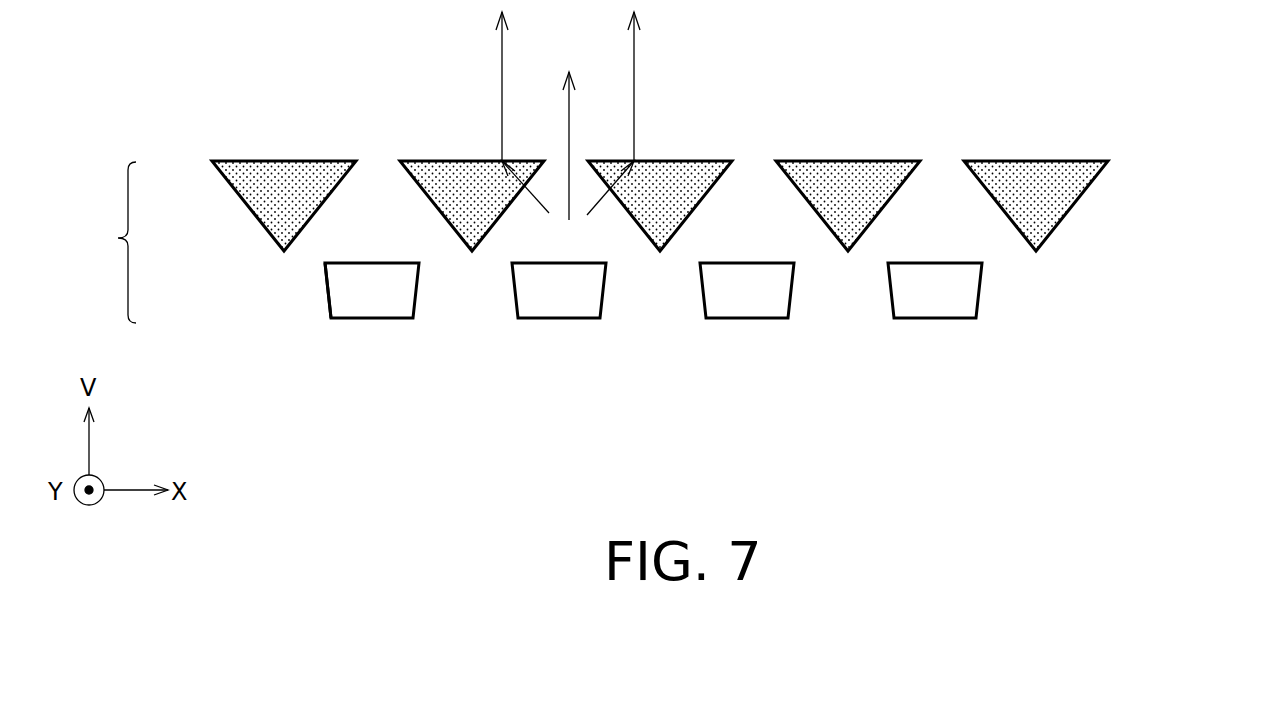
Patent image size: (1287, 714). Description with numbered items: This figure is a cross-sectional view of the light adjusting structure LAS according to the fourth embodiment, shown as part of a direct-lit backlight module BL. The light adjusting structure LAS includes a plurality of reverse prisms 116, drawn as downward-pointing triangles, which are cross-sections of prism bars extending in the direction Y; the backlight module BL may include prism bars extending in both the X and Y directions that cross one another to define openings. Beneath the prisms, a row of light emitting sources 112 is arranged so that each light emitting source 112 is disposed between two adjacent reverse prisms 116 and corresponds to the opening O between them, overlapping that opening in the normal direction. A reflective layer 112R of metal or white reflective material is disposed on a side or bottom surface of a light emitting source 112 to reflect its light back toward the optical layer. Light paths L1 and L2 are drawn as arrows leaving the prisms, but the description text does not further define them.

The reverse prism 116 is at (289, 172).
The light emitting source 112 is at (342, 293).
The reflective layer 112R is at (327, 310).
The backlight module BL is at (107, 242).
The first light beam L1 is at (568, 112).
The second light beam L2 is at (537, 203).
The opening O is at (378, 178).
The light adjusting structure LAS is at (1146, 203).